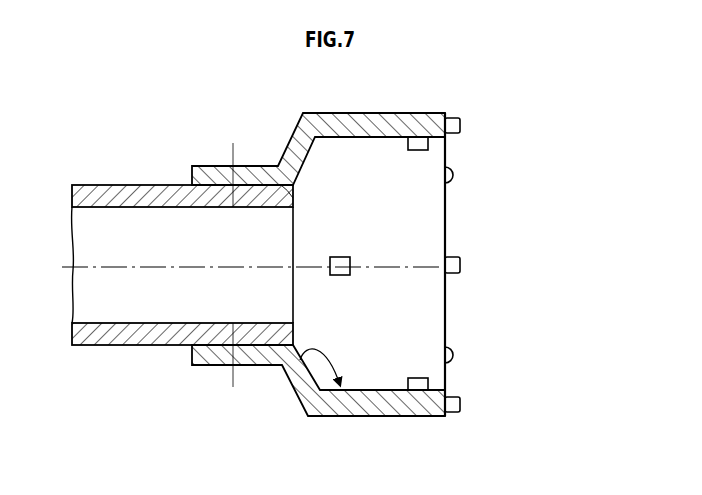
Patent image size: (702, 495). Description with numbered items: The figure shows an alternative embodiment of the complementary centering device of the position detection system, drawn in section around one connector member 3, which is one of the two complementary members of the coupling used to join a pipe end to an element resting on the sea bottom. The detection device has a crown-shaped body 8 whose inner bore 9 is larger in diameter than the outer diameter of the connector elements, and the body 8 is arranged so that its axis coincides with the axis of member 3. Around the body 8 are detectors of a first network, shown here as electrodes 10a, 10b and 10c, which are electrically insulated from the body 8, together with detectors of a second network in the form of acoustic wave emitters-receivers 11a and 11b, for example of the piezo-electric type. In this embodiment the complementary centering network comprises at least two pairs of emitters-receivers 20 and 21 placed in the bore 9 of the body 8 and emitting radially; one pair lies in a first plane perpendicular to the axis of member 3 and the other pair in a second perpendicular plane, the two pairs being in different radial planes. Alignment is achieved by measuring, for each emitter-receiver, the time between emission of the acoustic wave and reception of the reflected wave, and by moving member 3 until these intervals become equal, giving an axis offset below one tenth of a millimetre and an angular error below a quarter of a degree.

The complementary member of the connector 3 is at (113, 185).
The body 8 is at (293, 150).
The inner bore 9 is at (283, 368).
The electrode 10a is at (460, 122).
The electrode 10b is at (460, 265).
The electrode 10c is at (460, 404).
The acoustic wave emitter-receiver 11a is at (454, 177).
The acoustic wave emitter-receiver 11b is at (454, 353).
The pair of emitters-receivers 20 is at (428, 145).
The pair of emitters-receivers 21 is at (339, 258).